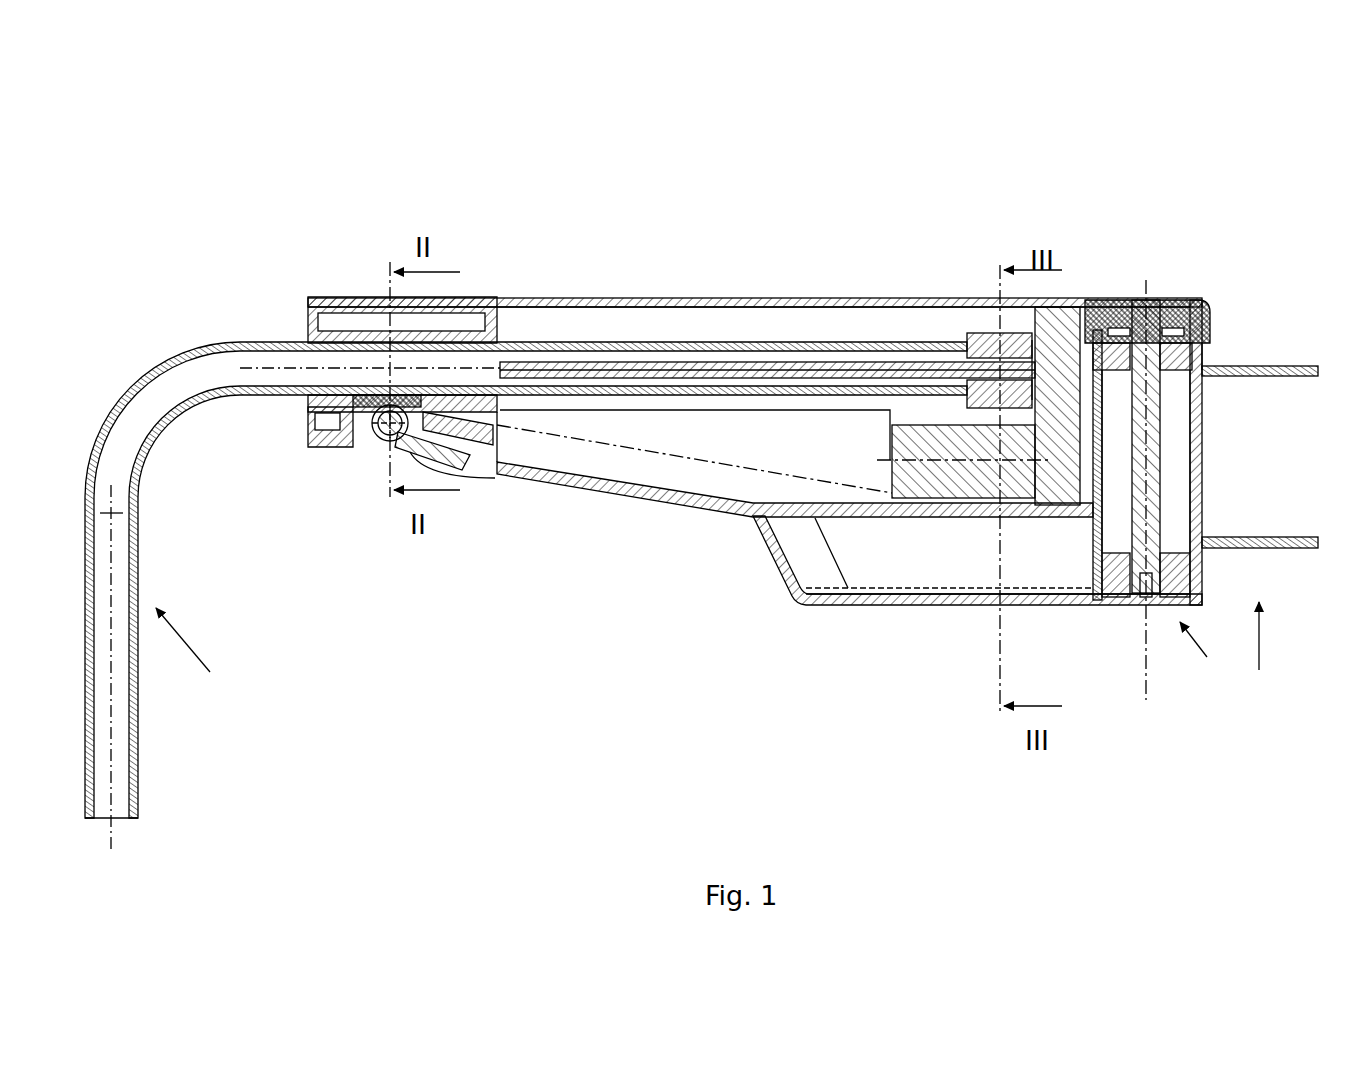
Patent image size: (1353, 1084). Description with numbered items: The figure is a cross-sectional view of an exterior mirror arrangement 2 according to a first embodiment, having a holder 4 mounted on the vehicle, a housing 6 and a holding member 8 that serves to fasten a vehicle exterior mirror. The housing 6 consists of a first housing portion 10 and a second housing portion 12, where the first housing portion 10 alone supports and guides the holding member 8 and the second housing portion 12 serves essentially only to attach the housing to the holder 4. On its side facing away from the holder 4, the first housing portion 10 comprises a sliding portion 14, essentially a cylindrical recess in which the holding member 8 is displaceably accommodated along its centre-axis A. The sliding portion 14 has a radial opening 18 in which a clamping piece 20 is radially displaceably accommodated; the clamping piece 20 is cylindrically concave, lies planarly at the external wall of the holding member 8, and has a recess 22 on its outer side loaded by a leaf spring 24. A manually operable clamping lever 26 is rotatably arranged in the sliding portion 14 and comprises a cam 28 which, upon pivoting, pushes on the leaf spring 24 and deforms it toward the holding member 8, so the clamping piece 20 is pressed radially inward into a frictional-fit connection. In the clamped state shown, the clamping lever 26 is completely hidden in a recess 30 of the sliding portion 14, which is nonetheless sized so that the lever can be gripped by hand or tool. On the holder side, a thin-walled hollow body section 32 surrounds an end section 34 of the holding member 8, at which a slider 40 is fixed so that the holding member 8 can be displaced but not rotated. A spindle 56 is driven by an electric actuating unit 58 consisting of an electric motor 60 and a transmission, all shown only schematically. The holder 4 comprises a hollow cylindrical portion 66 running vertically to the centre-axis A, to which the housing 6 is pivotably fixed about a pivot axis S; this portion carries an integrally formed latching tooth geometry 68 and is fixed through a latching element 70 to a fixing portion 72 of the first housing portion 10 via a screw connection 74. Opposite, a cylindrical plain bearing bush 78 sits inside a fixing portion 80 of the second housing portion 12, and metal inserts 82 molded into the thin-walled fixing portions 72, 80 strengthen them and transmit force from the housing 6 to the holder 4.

The exterior mirror arrangement 2 is at (290, 168).
The holder 4 is at (1258, 667).
The housing 6 is at (650, 652).
The holding member 8 is at (196, 667).
The first housing portion 10 is at (640, 297).
The second housing portion 12 is at (798, 605).
The sliding portion 14 is at (318, 370).
The radial opening 18 is at (365, 433).
The clamping piece 20 is at (413, 395).
The recess 22 is at (378, 393).
The leaf spring 24 is at (458, 412).
The clamping lever 26 is at (440, 440).
The cam 28 is at (372, 447).
The recess 30 is at (492, 437).
The thin-walled hollow body section 32 is at (713, 437).
The end section 34 is at (940, 412).
The slider 40 is at (975, 338).
The spindle 56 is at (720, 362).
The electric actuating unit 58 is at (947, 350).
The electric motor 60 is at (975, 472).
The hollow cylindrical portion 66 is at (1200, 445).
The latching tooth geometry 68 is at (1213, 352).
The latching element 70 is at (1203, 318).
The fixing portion 72 is at (1172, 292).
The screw connection 74 is at (1145, 333).
The cylindrical plain bearing bush 78 is at (1128, 548).
The fixing portion 80 is at (1204, 658).
The metal inserts 82 is at (925, 298).
The centre-axis A is at (234, 380).
The pivot axis S is at (1141, 523).